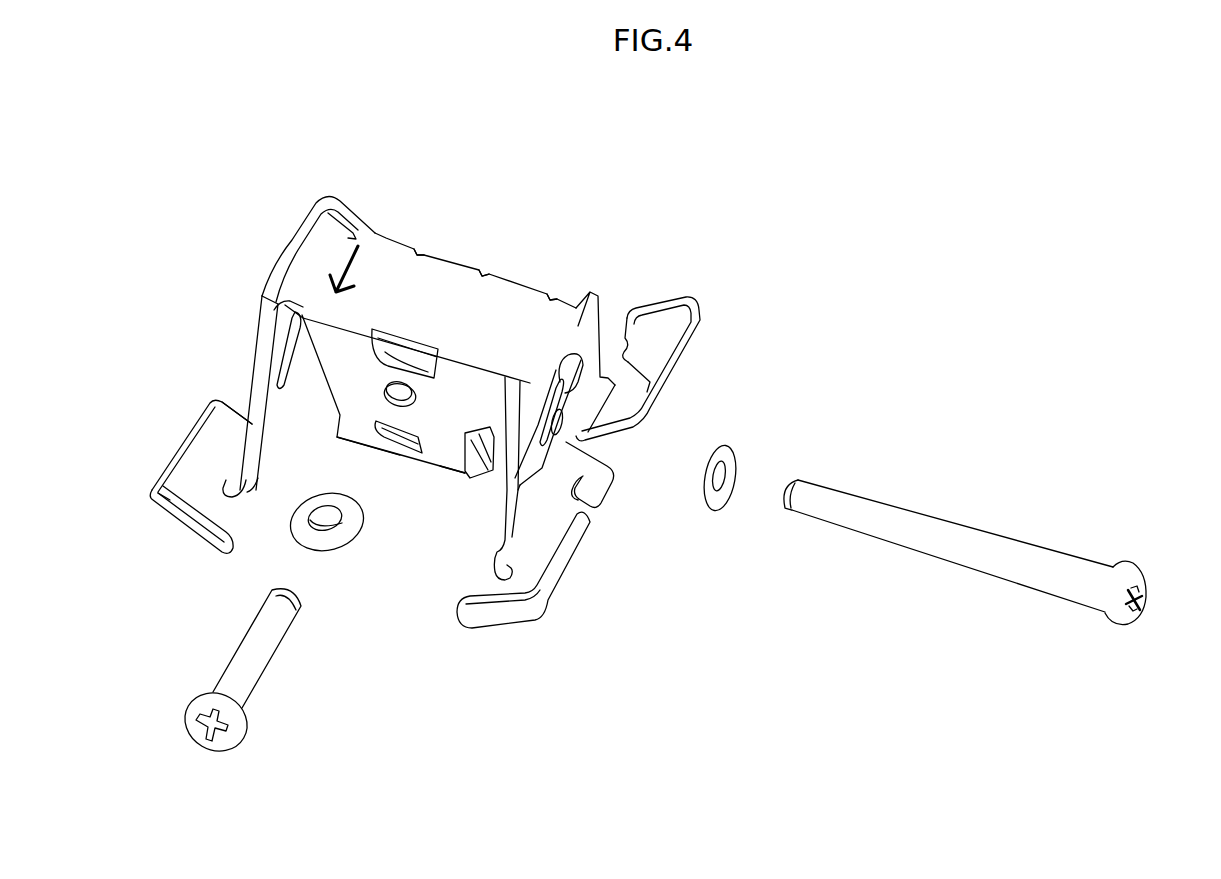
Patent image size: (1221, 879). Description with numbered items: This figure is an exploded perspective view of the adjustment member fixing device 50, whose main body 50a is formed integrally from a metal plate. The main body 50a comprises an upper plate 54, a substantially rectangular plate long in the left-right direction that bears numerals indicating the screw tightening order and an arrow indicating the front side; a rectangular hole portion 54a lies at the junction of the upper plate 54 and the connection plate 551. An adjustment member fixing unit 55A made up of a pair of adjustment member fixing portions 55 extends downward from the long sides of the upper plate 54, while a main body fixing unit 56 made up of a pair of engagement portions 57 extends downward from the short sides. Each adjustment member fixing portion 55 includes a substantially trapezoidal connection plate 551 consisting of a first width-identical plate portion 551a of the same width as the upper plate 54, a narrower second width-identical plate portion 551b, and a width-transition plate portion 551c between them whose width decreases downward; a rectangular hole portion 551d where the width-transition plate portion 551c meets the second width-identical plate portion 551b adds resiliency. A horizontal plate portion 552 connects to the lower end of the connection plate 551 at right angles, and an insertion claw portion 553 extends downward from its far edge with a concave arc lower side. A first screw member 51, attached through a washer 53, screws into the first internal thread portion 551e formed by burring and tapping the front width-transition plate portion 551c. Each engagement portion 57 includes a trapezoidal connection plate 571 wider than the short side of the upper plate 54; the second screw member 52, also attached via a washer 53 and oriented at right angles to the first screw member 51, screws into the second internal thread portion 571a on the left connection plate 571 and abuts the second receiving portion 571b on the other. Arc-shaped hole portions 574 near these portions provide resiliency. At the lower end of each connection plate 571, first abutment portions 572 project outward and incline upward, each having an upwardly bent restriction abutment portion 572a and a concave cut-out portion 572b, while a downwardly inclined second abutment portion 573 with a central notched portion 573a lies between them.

The adjustment member fixing device 50 is at (330, 150).
The main body 50a is at (537, 273).
The first screw member 51 is at (205, 740).
The second screw member 52 is at (1127, 578).
The washer 53 is at (333, 560).
The upper plate 54 is at (384, 257).
The hole portion 54a is at (457, 248).
The adjustment member fixing portion 55 is at (527, 338).
The adjustment member fixing unit 55A is at (336, 471).
The main body fixing unit 56 is at (167, 574).
The engagement portion 57 is at (713, 306).
The connection plate 551 is at (447, 433).
The first width-identical plate portion 551a is at (513, 300).
The second width-identical plate portion 551b is at (360, 423).
The width-transition plate portion 551c is at (457, 443).
The hole portion 551d is at (335, 433).
The first internal thread portion 551e is at (390, 386).
The horizontal plate portion 552 is at (492, 465).
The insertion claw portion 553 is at (470, 485).
The connection plate 571 is at (250, 380).
The second internal thread portion 571a is at (563, 420).
The second receiving portion 571b is at (292, 340).
The first abutment portion 572 is at (312, 235).
The restriction abutment portion 572a is at (350, 210).
The cut-out portion 572b is at (630, 350).
The second abutment portion 573 is at (245, 422).
The notched portion 573a is at (578, 500).
The arc-shaped hole portion 574 is at (293, 350).